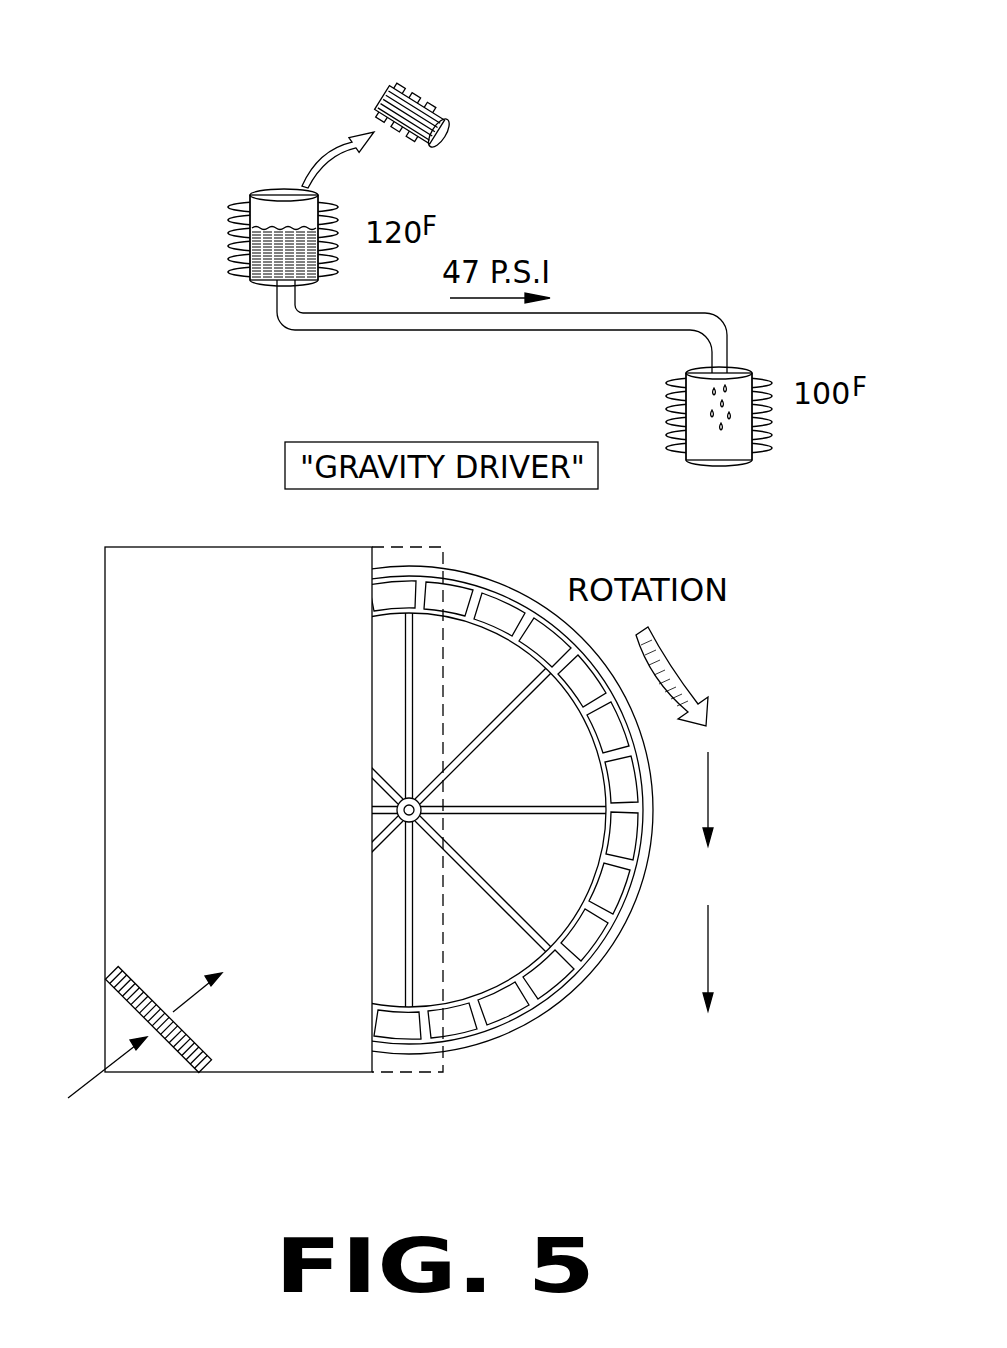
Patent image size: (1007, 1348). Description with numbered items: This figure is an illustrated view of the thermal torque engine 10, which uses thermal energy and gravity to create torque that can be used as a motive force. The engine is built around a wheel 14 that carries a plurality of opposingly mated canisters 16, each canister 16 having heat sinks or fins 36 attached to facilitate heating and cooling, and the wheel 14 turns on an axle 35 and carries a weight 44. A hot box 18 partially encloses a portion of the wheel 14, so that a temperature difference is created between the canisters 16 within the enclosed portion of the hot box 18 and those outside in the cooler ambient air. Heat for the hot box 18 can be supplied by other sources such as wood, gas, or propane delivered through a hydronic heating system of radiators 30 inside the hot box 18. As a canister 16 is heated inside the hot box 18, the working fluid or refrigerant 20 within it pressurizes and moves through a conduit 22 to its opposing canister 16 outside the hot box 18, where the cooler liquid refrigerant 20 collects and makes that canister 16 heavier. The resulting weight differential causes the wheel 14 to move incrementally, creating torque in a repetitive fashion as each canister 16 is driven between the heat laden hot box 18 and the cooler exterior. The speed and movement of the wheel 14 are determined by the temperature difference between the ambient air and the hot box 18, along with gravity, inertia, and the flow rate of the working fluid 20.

The thermal torque engine 10 is at (758, 662).
The wheel 14 is at (474, 791).
The canister 16 is at (283, 195).
The hot box 18 is at (160, 602).
The refrigerant 20 is at (275, 275).
The conduit 22 is at (433, 321).
The radiator 30 is at (185, 1047).
The axle 35 is at (420, 814).
The fin 36 is at (237, 205).
The weight 44 is at (550, 977).